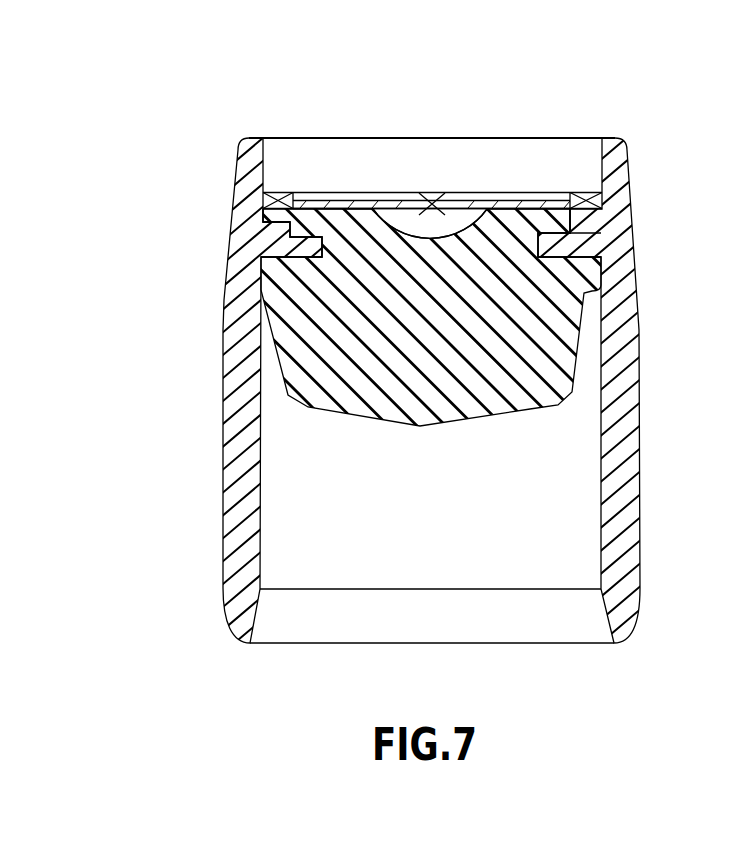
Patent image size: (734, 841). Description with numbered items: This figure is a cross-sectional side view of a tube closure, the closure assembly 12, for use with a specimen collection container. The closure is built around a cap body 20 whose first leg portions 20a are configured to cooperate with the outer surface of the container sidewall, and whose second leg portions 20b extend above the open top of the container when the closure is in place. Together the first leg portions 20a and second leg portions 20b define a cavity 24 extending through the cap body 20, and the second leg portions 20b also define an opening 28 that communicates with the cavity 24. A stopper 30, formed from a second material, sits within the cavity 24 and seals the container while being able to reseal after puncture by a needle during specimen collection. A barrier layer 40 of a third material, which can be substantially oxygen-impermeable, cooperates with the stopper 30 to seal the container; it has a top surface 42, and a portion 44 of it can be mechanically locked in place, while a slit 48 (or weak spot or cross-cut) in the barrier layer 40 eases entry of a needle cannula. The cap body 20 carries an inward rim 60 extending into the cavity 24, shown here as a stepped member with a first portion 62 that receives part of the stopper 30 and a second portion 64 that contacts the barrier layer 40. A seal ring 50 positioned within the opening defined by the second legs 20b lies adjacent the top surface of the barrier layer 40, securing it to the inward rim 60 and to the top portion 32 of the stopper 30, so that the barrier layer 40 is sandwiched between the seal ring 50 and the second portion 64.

The closure assembly 12 is at (180, 172).
The cap body 20 is at (632, 418).
The first leg portions 20a is at (232, 545).
The second leg portions 20b is at (240, 167).
The cavity 24 is at (453, 110).
The opening 28 is at (378, 177).
The stopper 30 is at (545, 313).
The top portion of the stopper 32 is at (603, 183).
The barrier layer 40 is at (518, 206).
The top surface of the barrier layer 42 is at (336, 206).
The portion of the barrier layer 44 is at (260, 221).
The slit 48 is at (434, 203).
The seal ring 50 is at (283, 200).
The inward rim 60 is at (252, 243).
The first portion of the inward rim 62 is at (553, 248).
The second portion of the inward rim 64 is at (580, 222).